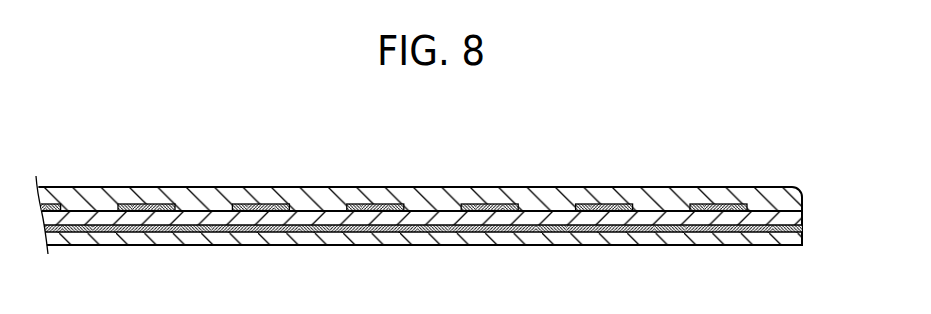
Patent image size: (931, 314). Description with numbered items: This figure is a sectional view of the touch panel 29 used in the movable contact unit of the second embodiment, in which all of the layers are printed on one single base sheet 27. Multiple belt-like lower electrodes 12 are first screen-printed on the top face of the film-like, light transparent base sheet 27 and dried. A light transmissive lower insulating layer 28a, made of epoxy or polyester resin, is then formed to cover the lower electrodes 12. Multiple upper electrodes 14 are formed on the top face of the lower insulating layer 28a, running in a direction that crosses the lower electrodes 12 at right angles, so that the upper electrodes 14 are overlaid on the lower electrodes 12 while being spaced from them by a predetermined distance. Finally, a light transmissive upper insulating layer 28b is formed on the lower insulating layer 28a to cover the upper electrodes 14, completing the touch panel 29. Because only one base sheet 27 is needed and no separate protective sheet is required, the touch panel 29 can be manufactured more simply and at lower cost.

The touch panel 29 is at (590, 152).
The upper insulating layer 28b is at (677, 201).
The lower insulating layer 28a is at (440, 215).
The upper electrodes 14 is at (143, 208).
The lower electrodes 12 is at (315, 225).
The base sheet 27 is at (552, 237).